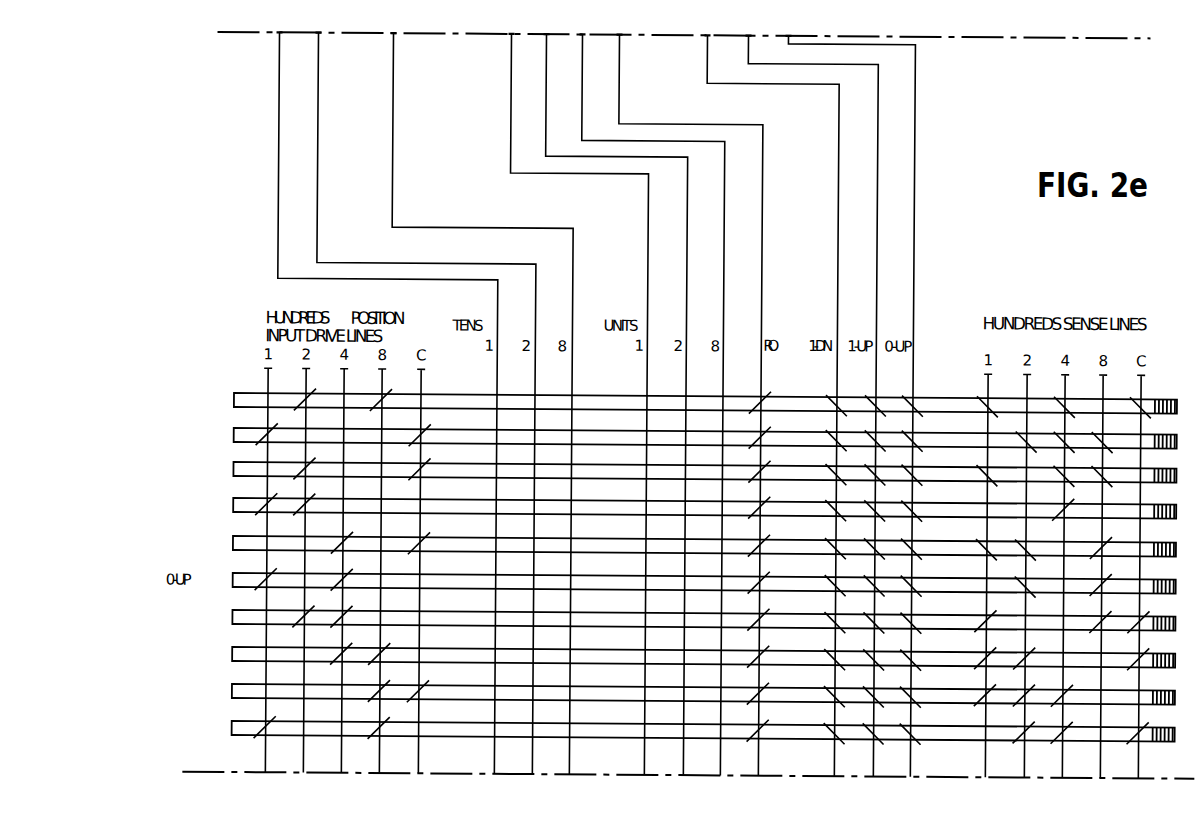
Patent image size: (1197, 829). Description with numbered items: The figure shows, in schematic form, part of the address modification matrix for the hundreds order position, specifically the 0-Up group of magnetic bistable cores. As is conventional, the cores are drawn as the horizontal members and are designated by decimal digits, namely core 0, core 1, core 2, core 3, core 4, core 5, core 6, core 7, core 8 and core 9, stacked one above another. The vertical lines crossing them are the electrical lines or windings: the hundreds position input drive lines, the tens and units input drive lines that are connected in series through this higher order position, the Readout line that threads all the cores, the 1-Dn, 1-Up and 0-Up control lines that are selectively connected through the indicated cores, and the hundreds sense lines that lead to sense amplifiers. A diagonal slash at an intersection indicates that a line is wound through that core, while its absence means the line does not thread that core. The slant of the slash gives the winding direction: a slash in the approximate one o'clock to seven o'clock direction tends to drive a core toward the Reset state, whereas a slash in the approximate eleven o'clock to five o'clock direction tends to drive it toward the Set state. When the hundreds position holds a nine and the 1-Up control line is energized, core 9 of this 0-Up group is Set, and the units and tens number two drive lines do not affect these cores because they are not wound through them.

The core 0 is at (696, 403).
The core 1 is at (696, 438).
The core 2 is at (696, 472).
The core 3 is at (696, 508).
The core 4 is at (695, 546).
The core 5 is at (695, 583).
The core 6 is at (695, 620).
The core 7 is at (695, 657).
The core 8 is at (694, 694).
The core 9 is at (694, 731).